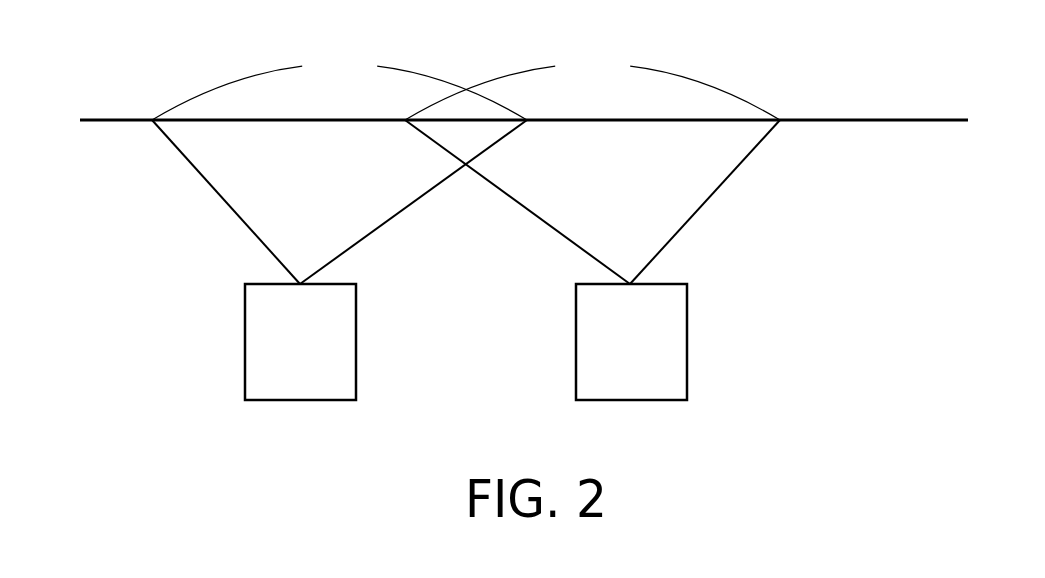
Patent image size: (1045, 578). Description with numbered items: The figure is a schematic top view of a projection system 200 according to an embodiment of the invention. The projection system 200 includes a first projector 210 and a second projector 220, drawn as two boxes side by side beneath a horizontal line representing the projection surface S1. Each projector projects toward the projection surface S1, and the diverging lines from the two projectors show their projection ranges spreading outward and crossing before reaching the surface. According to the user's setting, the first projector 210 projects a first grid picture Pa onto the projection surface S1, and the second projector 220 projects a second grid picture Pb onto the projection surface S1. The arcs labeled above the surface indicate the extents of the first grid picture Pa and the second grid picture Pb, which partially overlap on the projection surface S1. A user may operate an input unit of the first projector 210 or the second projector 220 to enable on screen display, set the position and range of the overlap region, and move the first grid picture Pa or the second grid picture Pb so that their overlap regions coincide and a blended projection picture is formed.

The projection system 200 is at (483, 301).
The first projector 210 is at (300, 400).
The second projector 220 is at (630, 400).
The projection surface S1 is at (887, 119).
The first grid picture Pa is at (339, 87).
The second grid picture Pb is at (592, 87).